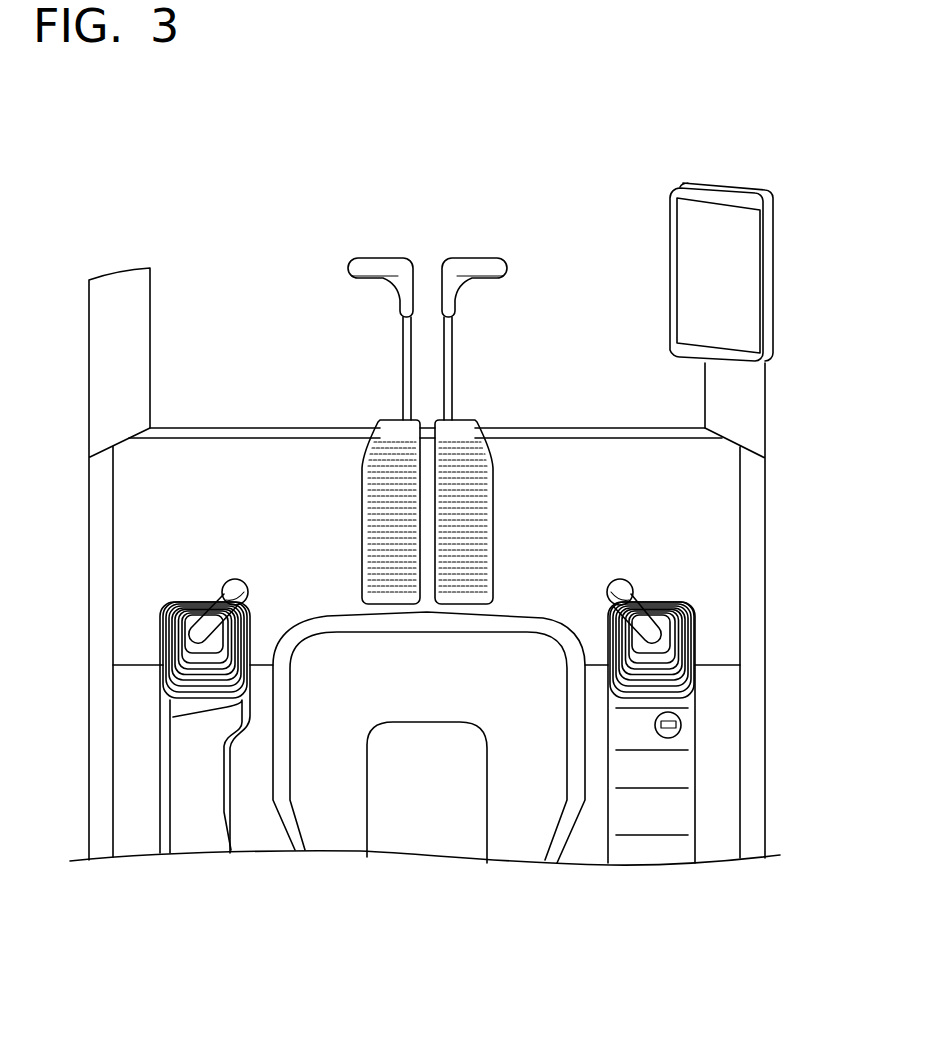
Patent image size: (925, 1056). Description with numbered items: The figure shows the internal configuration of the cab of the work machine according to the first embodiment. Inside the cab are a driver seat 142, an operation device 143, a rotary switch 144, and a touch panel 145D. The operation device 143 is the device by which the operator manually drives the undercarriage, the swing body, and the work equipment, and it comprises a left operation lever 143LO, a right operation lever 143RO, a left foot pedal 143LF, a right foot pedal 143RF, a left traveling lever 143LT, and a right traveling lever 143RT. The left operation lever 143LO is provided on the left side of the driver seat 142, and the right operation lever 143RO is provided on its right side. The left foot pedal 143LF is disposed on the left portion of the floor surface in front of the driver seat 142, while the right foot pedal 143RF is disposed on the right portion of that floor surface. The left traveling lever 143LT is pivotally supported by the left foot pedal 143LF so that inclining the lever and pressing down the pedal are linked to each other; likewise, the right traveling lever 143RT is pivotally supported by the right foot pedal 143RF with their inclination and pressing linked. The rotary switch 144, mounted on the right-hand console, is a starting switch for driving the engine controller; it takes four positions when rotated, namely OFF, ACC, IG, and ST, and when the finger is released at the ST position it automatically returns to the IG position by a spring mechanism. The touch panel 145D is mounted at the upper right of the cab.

The driver seat 142 is at (427, 847).
The operation device 143 is at (258, 314).
The left traveling lever 143LT is at (383, 258).
The right traveling lever 143RT is at (470, 258).
The left foot pedal 143LF is at (381, 420).
The right foot pedal 143RF is at (497, 395).
The left operation lever 143LO is at (237, 579).
The right operation lever 143RO is at (618, 578).
The rotary switch 144 is at (681, 725).
The touch panel 145D is at (738, 253).